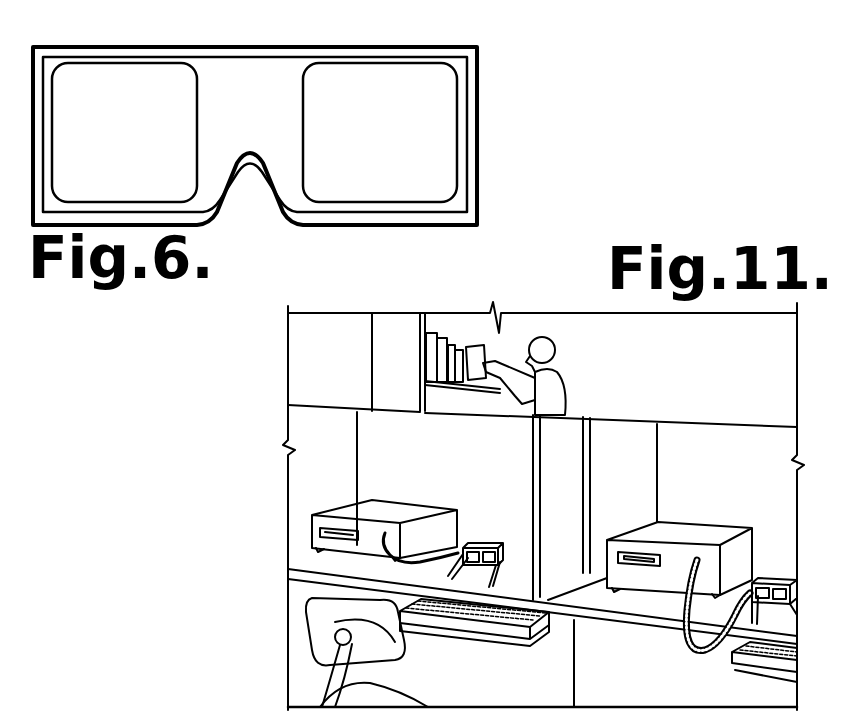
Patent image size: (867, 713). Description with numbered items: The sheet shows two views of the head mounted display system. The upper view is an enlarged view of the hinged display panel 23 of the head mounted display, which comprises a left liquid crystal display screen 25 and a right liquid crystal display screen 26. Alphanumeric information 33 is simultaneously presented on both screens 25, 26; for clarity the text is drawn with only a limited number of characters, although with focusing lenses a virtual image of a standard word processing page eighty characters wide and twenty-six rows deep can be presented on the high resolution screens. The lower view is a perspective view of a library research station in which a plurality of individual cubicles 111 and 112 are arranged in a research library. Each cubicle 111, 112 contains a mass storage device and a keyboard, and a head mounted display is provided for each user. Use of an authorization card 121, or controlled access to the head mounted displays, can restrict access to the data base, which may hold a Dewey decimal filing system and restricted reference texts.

In FIG. 6, the hinged display panel 23 is at (277, 18).
In FIG. 6, the left liquid crystal display screen 25 is at (122, 157).
In FIG. 6, the right liquid crystal display screen 26 is at (383, 165).
In FIG. 6, the alphanumeric information 33 is at (310, 90).
In FIG. 11, the individual cubicle 111 is at (444, 464).
In FIG. 11, the individual cubicle 112 is at (731, 473).
In FIG. 11, the authorization card 121 is at (642, 568).